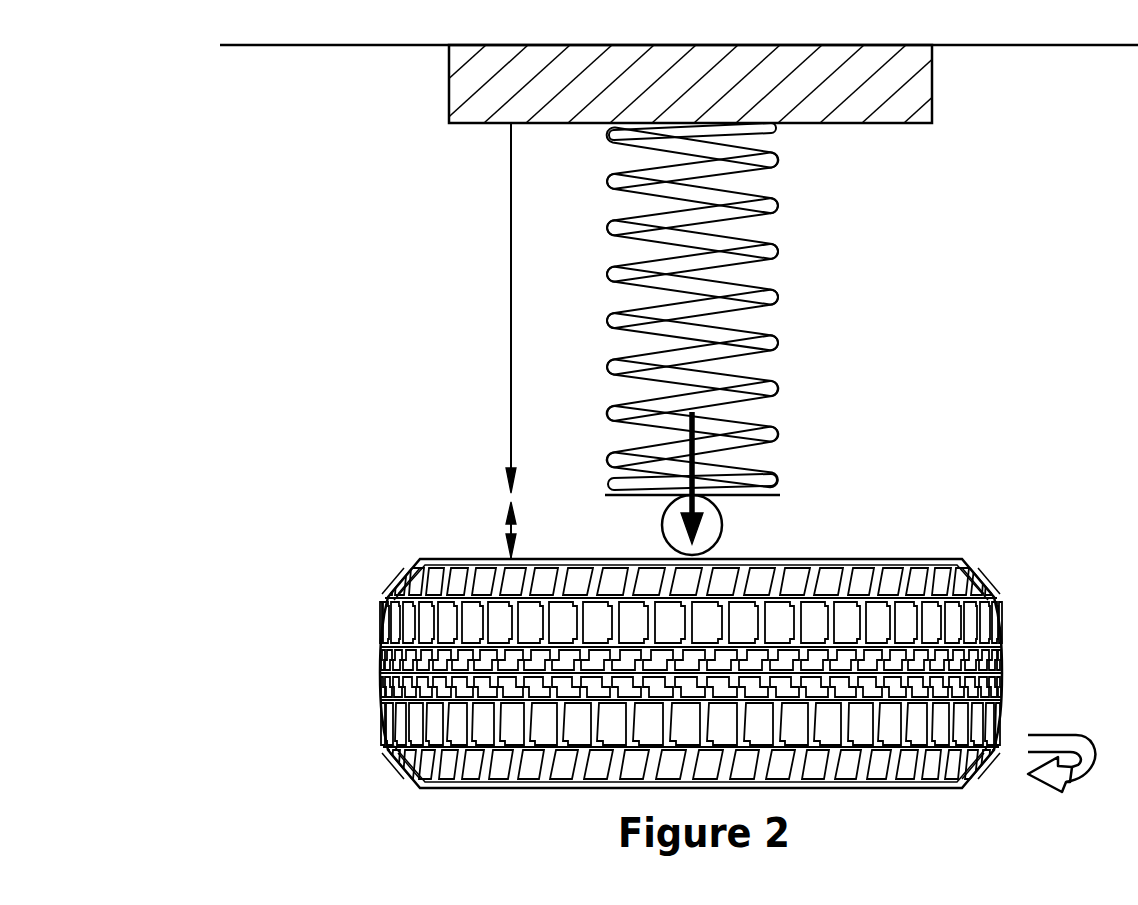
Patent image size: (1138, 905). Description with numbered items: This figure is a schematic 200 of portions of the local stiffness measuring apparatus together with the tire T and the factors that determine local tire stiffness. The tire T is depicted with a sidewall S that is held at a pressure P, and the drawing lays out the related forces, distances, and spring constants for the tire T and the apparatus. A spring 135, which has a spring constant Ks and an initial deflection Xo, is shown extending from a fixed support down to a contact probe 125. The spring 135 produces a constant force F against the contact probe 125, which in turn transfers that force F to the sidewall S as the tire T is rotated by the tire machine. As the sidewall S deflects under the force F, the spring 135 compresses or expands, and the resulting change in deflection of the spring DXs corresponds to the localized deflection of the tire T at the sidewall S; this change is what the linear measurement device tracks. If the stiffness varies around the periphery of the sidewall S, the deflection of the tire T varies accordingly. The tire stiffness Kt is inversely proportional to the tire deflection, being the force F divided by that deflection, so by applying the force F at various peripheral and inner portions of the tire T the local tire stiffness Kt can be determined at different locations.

The schematic 200 is at (250, 188).
The spring 135 is at (764, 309).
The contact probe 125 is at (710, 531).
The spring constant Ks is at (770, 253).
The tire stiffness Kt is at (922, 633).
The initial deflection Xo is at (511, 262).
The change in deflection of the spring DXs is at (511, 525).
The force F is at (727, 513).
The sidewall S is at (918, 558).
The pressure P is at (452, 632).
The tire T is at (709, 677).